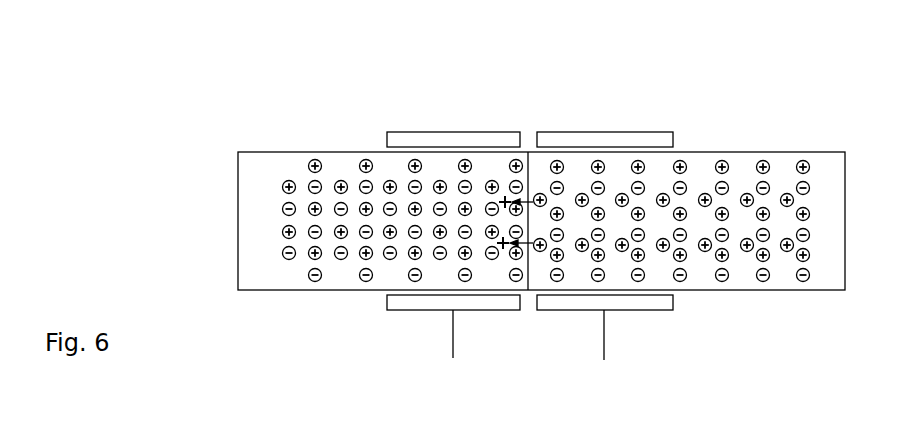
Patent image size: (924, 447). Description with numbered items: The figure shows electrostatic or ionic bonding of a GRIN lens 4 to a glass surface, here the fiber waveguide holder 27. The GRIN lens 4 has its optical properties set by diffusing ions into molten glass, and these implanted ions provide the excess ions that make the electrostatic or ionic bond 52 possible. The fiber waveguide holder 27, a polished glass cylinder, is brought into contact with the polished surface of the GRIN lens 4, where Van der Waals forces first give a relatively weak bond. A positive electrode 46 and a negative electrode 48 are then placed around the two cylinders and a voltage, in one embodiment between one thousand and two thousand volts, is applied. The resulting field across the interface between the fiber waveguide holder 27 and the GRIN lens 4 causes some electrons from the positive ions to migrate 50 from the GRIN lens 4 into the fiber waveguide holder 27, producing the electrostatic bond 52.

The GRIN lens 4 is at (817, 153).
The fiber waveguide holder 27 is at (282, 148).
The positive electrode 46 is at (473, 132).
The negative electrode 48 is at (590, 130).
The migration of electrons 50 is at (530, 230).
The electrostatic or ionic bond 52 is at (530, 235).